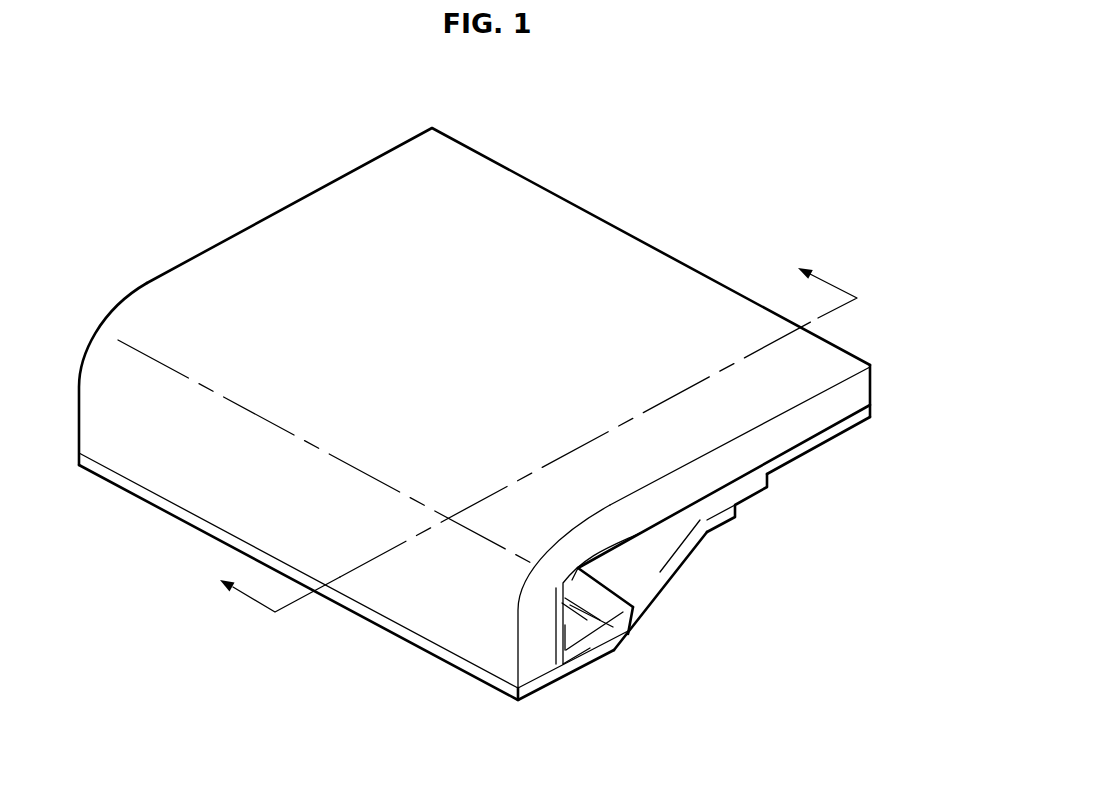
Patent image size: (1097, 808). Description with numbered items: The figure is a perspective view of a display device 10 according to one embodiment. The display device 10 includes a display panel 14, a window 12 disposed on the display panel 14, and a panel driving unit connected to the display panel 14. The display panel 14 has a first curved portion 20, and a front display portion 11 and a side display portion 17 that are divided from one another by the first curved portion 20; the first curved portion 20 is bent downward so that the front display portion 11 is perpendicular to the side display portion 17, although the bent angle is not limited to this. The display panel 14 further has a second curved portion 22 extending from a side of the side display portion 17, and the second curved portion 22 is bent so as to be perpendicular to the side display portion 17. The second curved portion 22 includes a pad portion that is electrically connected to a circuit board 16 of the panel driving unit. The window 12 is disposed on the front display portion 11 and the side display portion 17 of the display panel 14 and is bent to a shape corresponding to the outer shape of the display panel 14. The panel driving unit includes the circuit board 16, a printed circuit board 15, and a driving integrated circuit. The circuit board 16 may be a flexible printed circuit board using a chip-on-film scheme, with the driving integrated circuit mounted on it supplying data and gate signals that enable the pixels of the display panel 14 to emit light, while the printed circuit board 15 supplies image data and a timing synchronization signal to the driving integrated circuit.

The display device 10 is at (702, 194).
The front display portion 11 is at (655, 598).
The window 12 is at (858, 390).
The display panel 14 is at (852, 422).
The printed circuit board 15 is at (752, 490).
The circuit board 16 is at (675, 571).
The side display portion 17 is at (562, 622).
The first curved portion 20 is at (588, 600).
The second curved portion 22 is at (598, 638).